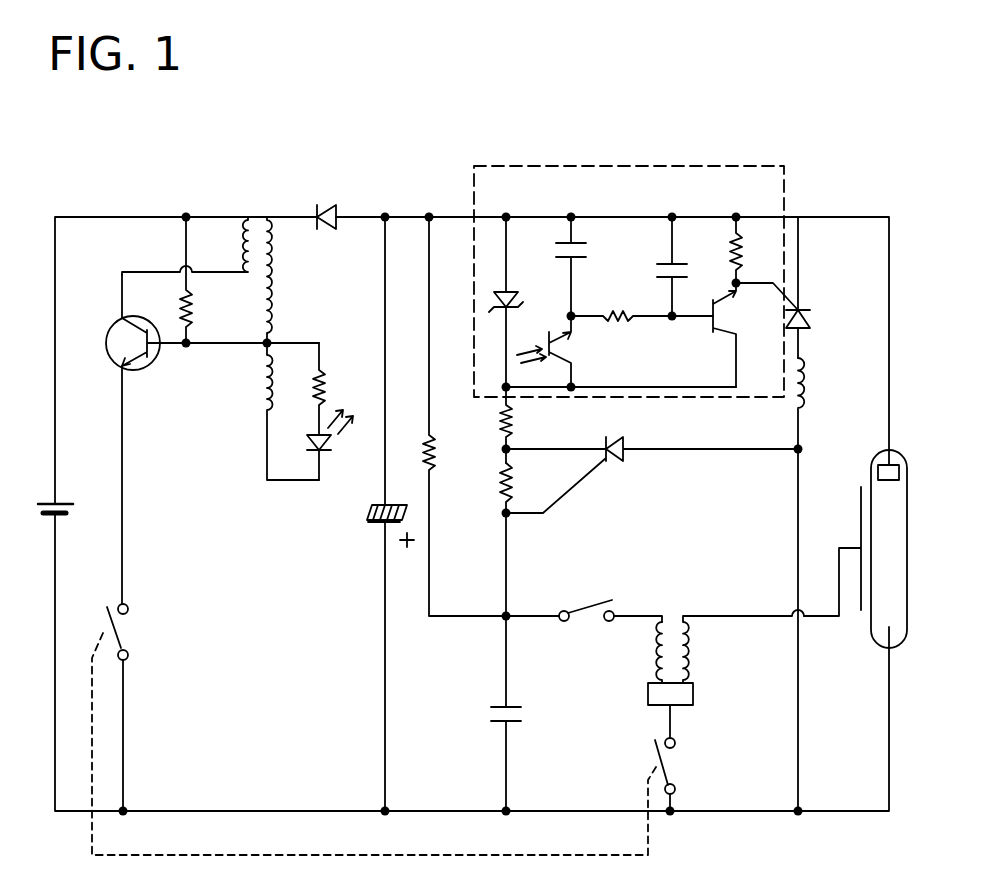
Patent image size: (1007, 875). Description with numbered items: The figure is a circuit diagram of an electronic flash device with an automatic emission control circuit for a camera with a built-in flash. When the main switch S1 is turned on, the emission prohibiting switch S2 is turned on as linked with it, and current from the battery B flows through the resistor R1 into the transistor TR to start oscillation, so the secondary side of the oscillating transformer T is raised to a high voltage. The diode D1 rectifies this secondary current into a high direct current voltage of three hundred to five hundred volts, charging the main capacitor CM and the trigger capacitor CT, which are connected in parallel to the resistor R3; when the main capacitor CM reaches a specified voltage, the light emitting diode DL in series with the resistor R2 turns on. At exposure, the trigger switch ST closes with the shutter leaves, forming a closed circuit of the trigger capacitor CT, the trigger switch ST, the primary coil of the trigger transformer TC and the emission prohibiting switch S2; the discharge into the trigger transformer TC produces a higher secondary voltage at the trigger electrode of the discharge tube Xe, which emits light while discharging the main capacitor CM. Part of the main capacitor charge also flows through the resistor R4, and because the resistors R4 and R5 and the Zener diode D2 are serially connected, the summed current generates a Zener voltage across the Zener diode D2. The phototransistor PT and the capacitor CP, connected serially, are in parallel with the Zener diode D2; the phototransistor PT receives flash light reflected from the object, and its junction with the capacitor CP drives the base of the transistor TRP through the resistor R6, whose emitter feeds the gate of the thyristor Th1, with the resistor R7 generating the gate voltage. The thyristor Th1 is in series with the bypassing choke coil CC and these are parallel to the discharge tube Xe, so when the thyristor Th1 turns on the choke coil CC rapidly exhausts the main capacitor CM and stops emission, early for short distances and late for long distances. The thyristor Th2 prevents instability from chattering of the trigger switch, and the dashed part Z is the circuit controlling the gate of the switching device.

The battery B is at (60, 492).
The main switch S1 is at (374, 610).
The transistor TR is at (146, 344).
The resistor R1 is at (249, 280).
The oscillating transformer T is at (220, 331).
The diode D1 is at (344, 207).
The resistor R2 is at (338, 389).
The light emitting diode DL is at (336, 446).
The main capacitor CM is at (376, 514).
The resistor R3 is at (464, 416).
The circuit for controlling the gate of the switching device Z is at (712, 167).
The Zener diode D2 is at (521, 302).
The capacitor CP is at (592, 266).
The resistor R6 is at (642, 300).
The phototransistor PT is at (562, 351).
The resistor R7 is at (764, 263).
The transistor TRP is at (746, 335).
The thyristor Th1 is at (817, 287).
The choke coil CC is at (821, 584).
The discharge tube Xe is at (855, 533).
The resistor R5 is at (524, 425).
The resistor R4 is at (524, 585).
The thyristor Th2 is at (652, 475).
The trigger switch ST is at (584, 597).
The trigger transformer TC is at (726, 657).
The emission prohibiting switch S2 is at (681, 758).
The trigger capacitor CT is at (526, 757).